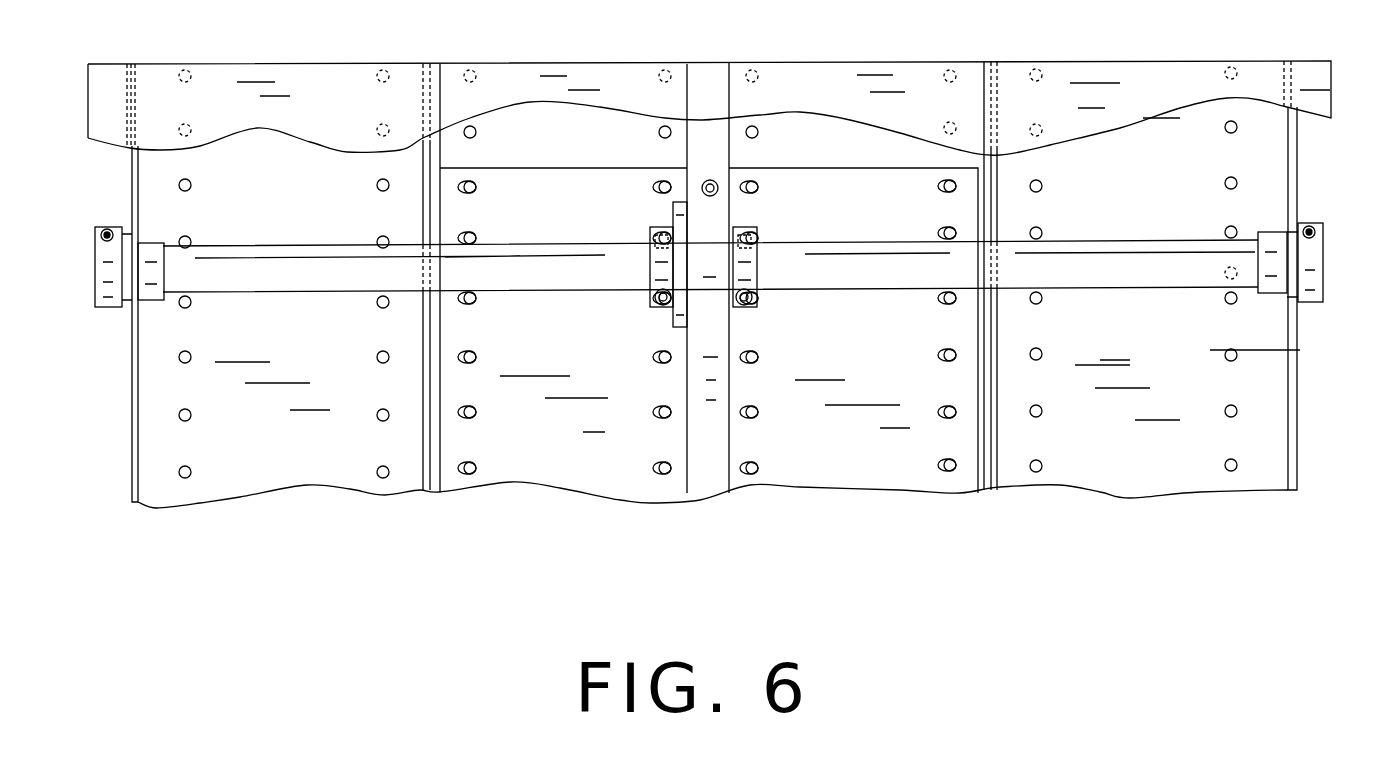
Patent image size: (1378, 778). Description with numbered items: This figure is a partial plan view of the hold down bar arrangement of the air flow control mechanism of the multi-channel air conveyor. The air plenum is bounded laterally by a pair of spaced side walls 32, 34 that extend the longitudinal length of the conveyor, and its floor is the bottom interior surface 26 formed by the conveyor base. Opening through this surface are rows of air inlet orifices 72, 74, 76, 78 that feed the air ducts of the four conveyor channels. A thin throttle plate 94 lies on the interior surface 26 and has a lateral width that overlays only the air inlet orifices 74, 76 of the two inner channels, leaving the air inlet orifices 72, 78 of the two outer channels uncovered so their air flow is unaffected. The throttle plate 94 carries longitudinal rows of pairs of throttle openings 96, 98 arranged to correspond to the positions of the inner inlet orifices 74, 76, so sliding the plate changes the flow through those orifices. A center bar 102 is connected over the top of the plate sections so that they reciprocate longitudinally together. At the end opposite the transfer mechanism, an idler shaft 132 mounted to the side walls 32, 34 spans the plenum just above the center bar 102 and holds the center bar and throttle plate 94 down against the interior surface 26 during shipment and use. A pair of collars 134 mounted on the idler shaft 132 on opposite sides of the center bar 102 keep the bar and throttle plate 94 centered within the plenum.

The bottom interior surface 26 is at (1165, 473).
The side wall 32 is at (130, 407).
The side wall 34 is at (1293, 343).
The air inlet orifice 72 is at (193, 176).
The air inlet orifice 74 is at (478, 181).
The air inlet orifice 76 is at (760, 180).
The air inlet orifice 78 is at (1040, 180).
The throttle plate 94 is at (817, 470).
The throttle opening 96 is at (463, 180).
The throttle opening 98 is at (745, 180).
The center bar 102 is at (698, 430).
The idler shaft 132 is at (1190, 247).
The collar 134 is at (663, 227).